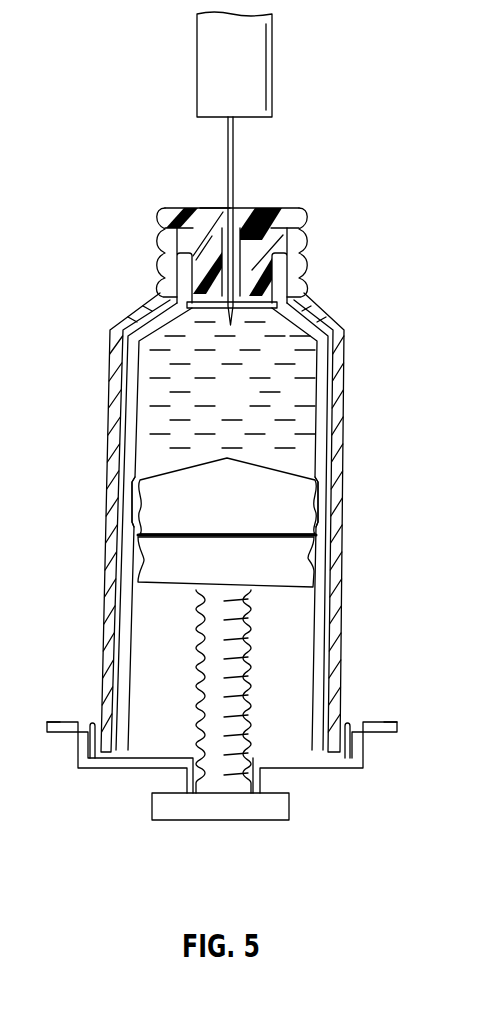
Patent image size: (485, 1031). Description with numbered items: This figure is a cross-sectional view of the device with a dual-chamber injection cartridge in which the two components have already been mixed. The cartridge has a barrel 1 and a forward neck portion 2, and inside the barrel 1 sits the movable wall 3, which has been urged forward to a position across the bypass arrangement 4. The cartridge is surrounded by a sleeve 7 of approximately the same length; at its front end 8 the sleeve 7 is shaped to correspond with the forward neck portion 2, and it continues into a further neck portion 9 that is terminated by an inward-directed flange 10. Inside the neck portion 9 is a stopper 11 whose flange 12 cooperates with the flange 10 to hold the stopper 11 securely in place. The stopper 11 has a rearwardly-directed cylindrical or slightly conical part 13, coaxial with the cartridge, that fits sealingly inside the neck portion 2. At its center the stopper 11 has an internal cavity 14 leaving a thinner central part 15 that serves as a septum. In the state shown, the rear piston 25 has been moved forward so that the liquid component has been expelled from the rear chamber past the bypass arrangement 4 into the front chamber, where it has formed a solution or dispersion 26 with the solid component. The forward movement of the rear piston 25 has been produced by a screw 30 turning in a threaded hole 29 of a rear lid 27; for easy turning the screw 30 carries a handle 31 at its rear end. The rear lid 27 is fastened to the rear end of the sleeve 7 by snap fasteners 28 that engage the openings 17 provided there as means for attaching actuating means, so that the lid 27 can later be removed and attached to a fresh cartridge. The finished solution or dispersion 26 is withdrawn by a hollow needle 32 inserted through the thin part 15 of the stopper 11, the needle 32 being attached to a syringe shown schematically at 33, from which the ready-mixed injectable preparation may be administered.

The barrel 1 is at (135, 392).
The forward neck portion 2 is at (160, 302).
The movable wall 3 is at (235, 515).
The bypass arrangement 4 is at (135, 500).
The sleeve 7 is at (343, 393).
The front end of the sleeve 8 is at (323, 312).
The neck portion of the sleeve 9 is at (163, 238).
The inward-directed flange 10 is at (188, 206).
The stopper 11 is at (253, 258).
The flange of the stopper 12 is at (304, 238).
The rearwardly-directed cylindrical part 13 is at (183, 285).
The internal cavity 14 is at (244, 222).
The thinner central part 15 is at (215, 204).
The means for attaching actuating means 17 is at (107, 730).
The rear piston 25 is at (242, 568).
The solution or dispersion 26 is at (245, 406).
The rear lid 27 is at (140, 770).
The snap fasteners 28 is at (95, 727).
The threaded hole 29 is at (253, 785).
The screw 30 is at (237, 680).
The handle 31 is at (263, 820).
The hollow needle 32 is at (236, 152).
The syringe 33 is at (250, 82).